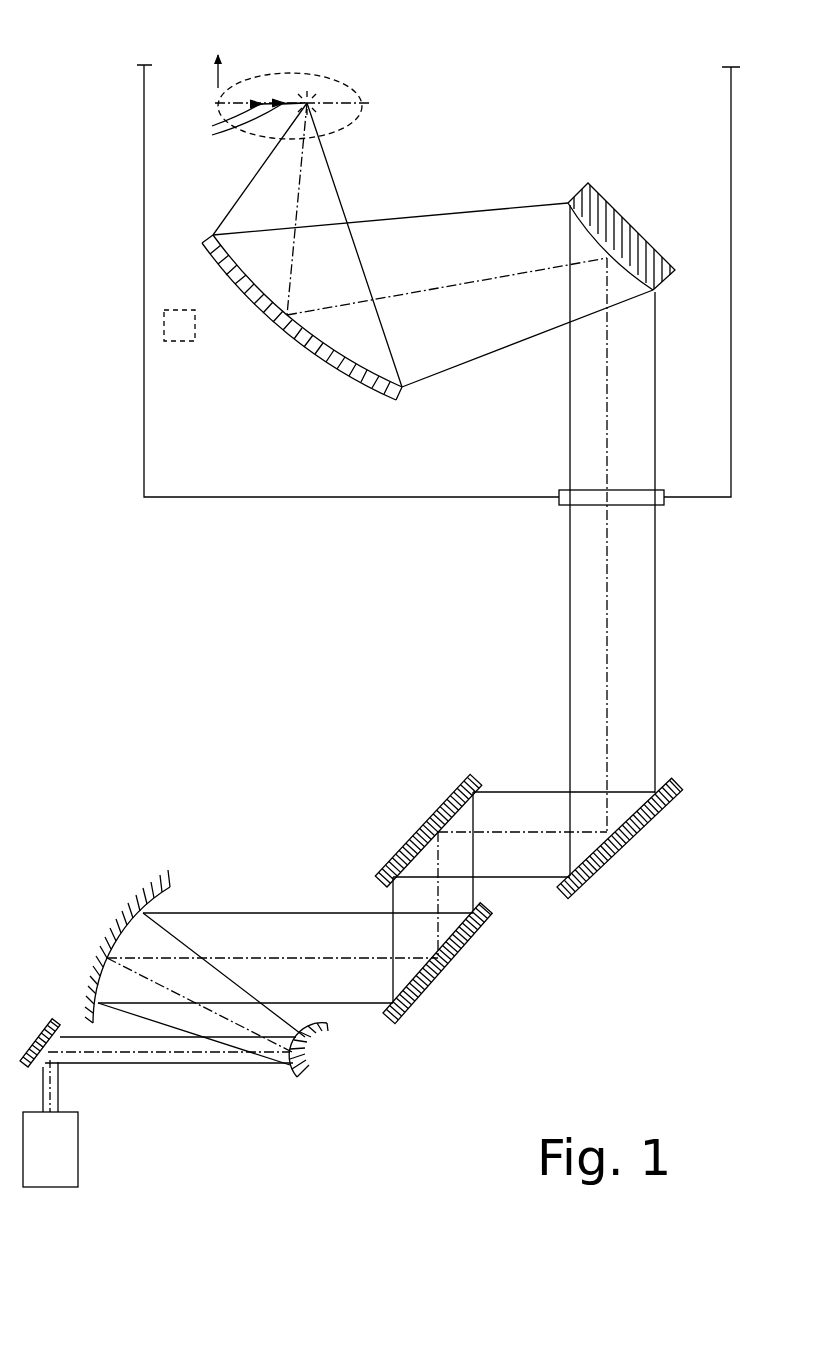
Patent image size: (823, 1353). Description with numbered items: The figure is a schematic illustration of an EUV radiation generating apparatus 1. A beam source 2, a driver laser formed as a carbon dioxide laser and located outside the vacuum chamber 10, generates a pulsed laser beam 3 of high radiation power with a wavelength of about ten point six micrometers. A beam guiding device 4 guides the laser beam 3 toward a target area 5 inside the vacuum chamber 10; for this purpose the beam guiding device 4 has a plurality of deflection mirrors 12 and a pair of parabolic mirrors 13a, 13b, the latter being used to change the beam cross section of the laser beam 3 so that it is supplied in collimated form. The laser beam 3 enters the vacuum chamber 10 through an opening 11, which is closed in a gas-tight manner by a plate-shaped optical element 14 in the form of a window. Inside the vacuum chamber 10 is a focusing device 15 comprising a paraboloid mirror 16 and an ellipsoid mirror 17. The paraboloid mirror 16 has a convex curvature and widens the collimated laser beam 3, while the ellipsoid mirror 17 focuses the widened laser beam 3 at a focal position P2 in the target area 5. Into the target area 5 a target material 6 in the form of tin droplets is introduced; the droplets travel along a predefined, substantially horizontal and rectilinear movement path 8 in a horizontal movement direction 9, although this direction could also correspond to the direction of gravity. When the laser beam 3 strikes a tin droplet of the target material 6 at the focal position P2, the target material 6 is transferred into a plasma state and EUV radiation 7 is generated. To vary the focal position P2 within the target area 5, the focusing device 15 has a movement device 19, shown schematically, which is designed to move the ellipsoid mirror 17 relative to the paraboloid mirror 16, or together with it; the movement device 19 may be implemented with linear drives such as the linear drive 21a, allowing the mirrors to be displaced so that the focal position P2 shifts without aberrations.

The EUV radiation generating apparatus 1 is at (112, 122).
The beam source 2 is at (70, 1147).
The laser beam 3 is at (53, 1080).
The beam guiding device 4 is at (523, 715).
The target area 5 is at (358, 88).
The target material 6 is at (249, 122).
The EUV radiation 7 is at (311, 99).
The movement path 8 is at (210, 102).
The movement direction 9 is at (272, 85).
The vacuum chamber 10 is at (143, 205).
The opening 11 is at (548, 510).
The deflection mirrors 12 is at (432, 817).
The parabolic mirror 13a is at (317, 1050).
The parabolic mirror 13b is at (102, 925).
The plate-shaped optical element 14 is at (628, 502).
The focusing device 15 is at (492, 148).
The paraboloid mirror 16 is at (672, 236).
The ellipsoid mirror 17 is at (270, 353).
The movement device 19 is at (163, 325).
The linear drive 21a is at (327, 153).
The focal position P2 is at (307, 103).